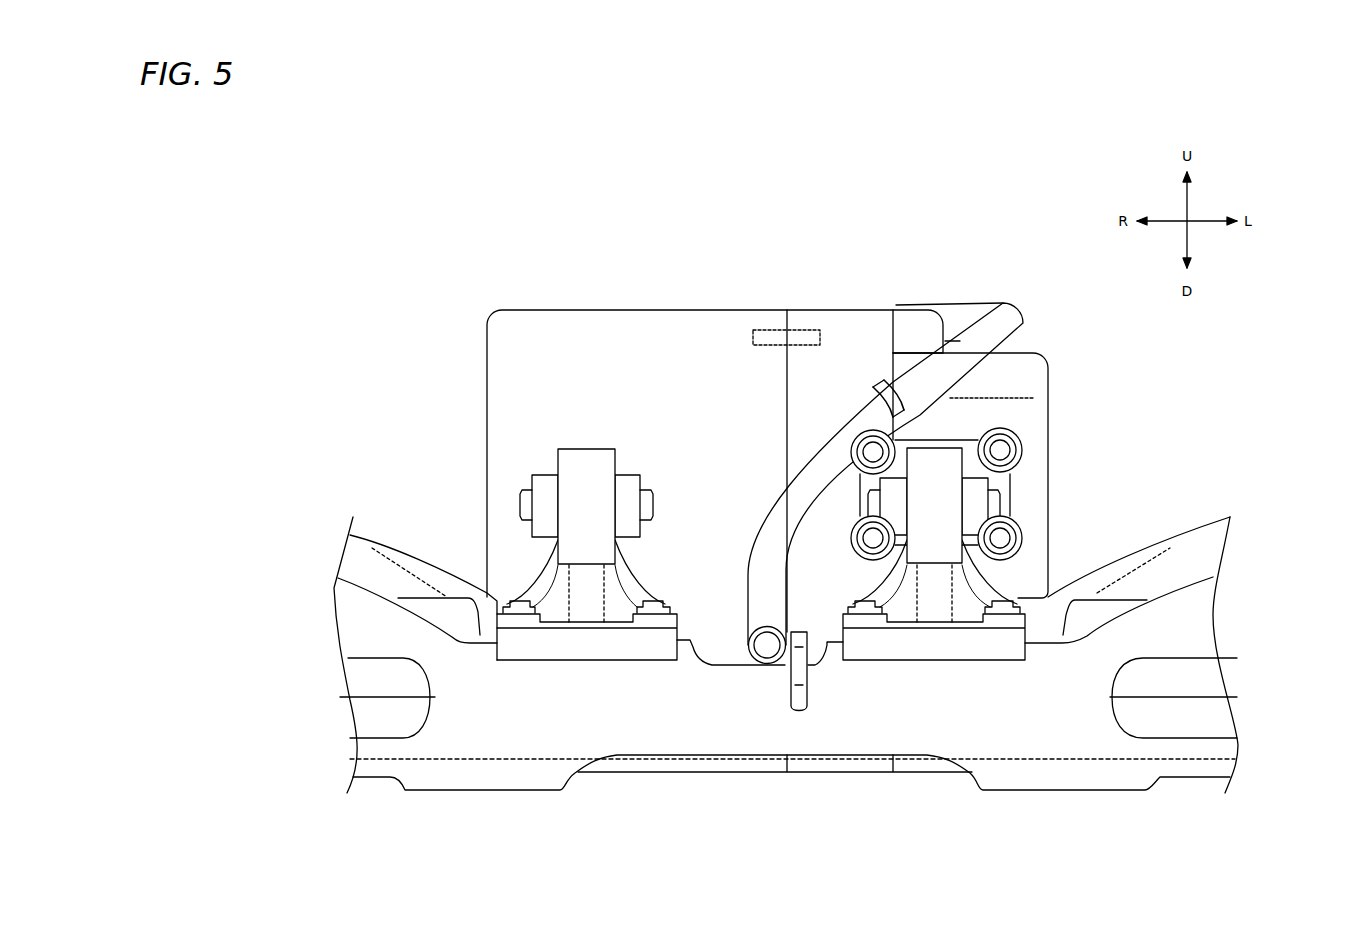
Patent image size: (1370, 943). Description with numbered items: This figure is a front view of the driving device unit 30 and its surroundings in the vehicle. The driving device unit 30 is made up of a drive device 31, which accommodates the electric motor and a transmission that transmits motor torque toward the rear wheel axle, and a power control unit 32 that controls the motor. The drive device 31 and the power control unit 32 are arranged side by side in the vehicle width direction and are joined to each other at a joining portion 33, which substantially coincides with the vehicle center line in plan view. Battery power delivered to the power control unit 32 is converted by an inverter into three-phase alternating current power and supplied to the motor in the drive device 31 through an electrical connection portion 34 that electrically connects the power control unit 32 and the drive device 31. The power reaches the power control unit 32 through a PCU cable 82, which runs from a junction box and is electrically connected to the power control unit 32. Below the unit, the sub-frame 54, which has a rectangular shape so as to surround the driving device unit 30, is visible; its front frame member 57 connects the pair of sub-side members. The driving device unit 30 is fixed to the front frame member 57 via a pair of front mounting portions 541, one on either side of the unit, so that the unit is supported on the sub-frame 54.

The driving device unit 30 is at (766, 432).
The drive device 31 is at (1050, 387).
The power control unit (PCU) 32 is at (487, 357).
The joining portion 33 is at (787, 307).
The electrical connection portion 34 is at (770, 329).
The PCU cable 82 is at (1002, 303).
The front mounting portions 541 is at (578, 493).
The sub-frame 54 is at (1226, 578).
The front frame member 57 is at (1208, 618).